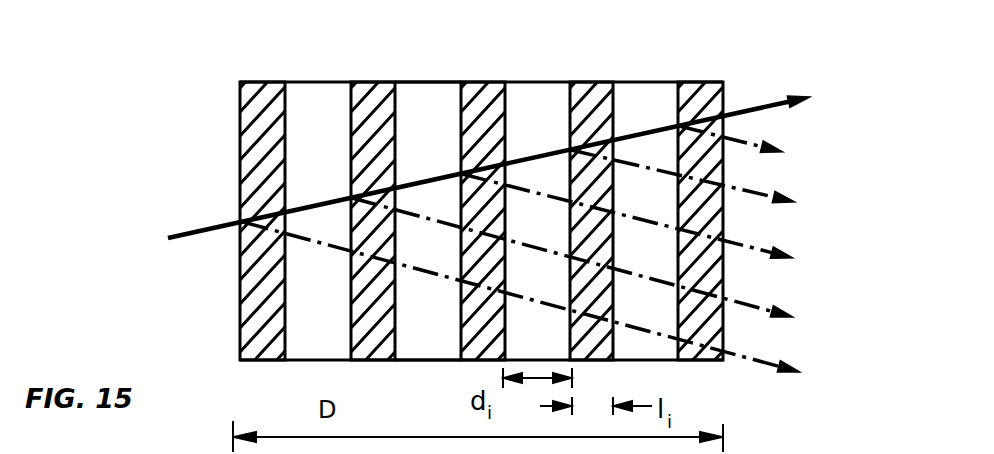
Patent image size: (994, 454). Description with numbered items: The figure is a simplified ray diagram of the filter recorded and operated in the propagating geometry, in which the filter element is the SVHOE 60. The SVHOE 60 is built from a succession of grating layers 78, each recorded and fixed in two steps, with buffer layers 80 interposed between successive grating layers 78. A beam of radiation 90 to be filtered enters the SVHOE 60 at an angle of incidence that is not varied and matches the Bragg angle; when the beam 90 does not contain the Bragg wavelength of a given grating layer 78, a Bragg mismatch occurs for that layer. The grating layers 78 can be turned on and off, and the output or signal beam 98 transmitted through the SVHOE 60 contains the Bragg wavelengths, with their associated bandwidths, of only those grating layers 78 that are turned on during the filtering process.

The SVHOE 60 is at (740, 48).
The grating layer 78 is at (262, 78).
The buffer layer 80 is at (419, 78).
The beam of radiation 90 is at (185, 240).
The output or signal beam 98 is at (848, 392).